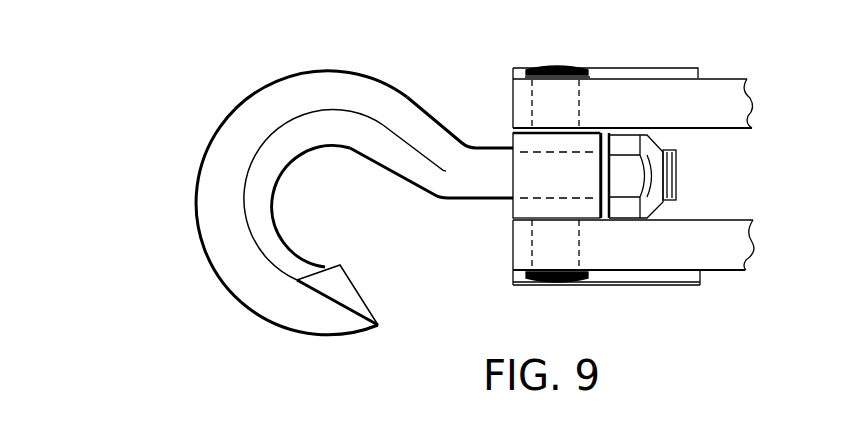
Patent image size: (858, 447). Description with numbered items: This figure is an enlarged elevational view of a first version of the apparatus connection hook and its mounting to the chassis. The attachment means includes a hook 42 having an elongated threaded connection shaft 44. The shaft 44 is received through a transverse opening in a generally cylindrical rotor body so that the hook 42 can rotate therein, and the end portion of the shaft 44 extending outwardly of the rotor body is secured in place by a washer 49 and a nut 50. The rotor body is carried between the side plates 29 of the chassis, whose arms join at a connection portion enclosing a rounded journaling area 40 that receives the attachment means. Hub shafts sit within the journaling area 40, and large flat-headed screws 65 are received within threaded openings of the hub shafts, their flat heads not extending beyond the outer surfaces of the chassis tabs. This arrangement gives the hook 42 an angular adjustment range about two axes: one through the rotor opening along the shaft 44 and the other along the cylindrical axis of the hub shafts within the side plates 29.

The journaling area 40 is at (508, 52).
The hook 42 is at (248, 117).
The side plate 29 is at (748, 80).
The flat-headed screw 65 is at (566, 67).
The washer 49 is at (610, 218).
The nut 50 is at (656, 152).
The threaded connection shaft 44 is at (677, 176).